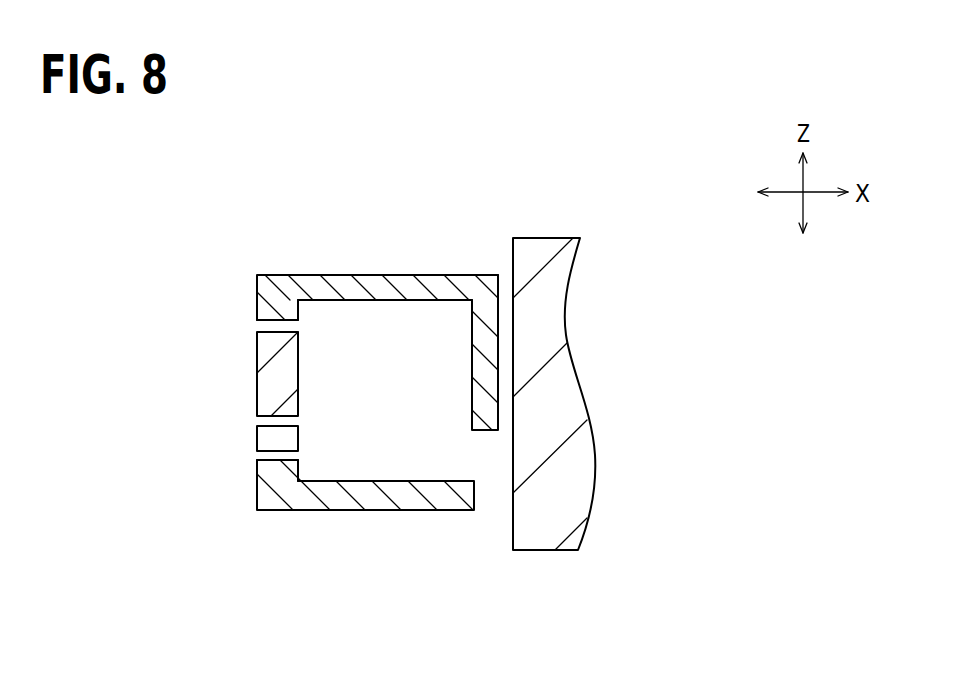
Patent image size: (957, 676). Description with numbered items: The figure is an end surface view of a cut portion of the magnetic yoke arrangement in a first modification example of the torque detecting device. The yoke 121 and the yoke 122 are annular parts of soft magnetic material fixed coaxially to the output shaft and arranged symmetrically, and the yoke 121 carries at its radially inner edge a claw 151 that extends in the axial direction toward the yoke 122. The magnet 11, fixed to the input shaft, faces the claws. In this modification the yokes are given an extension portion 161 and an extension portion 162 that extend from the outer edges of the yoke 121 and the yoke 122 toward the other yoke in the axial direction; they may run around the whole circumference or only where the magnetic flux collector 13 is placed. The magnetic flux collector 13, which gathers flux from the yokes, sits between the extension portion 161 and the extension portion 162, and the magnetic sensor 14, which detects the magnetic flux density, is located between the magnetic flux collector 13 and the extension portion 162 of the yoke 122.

The magnet 11 is at (543, 248).
The magnetic flux collector 13 is at (267, 349).
The magnetic sensor 14 is at (268, 437).
The yoke 121 is at (385, 280).
The yoke 122 is at (385, 503).
The claw 151 is at (482, 430).
The extension portion 161 is at (262, 304).
The extension portion 162 is at (258, 492).